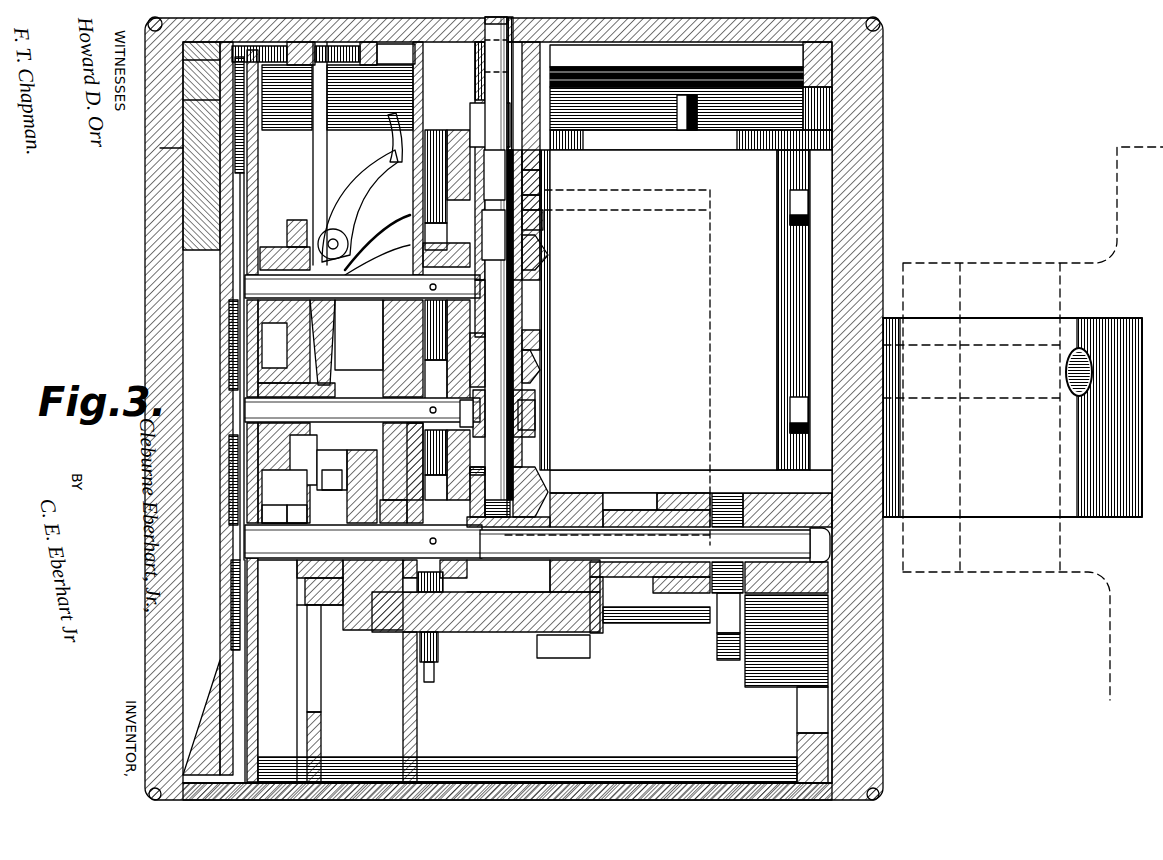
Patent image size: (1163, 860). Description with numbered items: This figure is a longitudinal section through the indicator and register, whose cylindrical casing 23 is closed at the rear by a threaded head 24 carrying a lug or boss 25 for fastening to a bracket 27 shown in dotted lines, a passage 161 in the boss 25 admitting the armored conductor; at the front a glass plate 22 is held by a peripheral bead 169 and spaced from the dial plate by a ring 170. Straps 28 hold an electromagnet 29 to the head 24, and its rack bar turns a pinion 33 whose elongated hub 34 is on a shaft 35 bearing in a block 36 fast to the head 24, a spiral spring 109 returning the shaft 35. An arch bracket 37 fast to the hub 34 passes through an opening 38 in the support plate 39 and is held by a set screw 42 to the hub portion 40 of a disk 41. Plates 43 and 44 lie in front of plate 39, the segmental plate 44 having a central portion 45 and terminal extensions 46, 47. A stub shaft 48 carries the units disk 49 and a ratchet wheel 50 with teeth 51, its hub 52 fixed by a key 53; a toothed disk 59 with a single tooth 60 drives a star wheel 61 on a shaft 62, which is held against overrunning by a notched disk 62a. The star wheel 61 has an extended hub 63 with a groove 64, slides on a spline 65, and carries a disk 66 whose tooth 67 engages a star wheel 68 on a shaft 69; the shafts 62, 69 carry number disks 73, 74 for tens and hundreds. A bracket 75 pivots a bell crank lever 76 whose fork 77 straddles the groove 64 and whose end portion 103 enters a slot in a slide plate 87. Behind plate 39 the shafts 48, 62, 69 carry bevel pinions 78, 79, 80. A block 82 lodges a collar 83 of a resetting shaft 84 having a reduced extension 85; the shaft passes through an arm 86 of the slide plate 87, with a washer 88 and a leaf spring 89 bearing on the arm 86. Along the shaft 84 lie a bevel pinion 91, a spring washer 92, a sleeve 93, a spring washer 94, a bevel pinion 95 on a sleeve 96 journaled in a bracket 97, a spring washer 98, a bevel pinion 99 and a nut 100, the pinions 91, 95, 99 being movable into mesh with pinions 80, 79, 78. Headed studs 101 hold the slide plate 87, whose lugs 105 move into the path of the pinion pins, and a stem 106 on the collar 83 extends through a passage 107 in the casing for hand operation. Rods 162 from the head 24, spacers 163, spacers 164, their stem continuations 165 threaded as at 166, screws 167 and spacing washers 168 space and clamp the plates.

The glass plate 22 is at (145, 286).
The casing 23 is at (490, 783).
The head 24 is at (880, 100).
The lug or boss 25 is at (1012, 417).
The bracket 27 is at (1075, 578).
The straps 28 is at (668, 347).
The electromagnet 29 is at (727, 148).
The pinion 33 is at (685, 580).
The elongated hub 34 is at (630, 580).
The shaft 35 is at (645, 544).
The block 36 is at (840, 575).
The arch bracket 37 is at (475, 625).
The opening 38 is at (405, 655).
The plate 39 is at (418, 728).
The hub portion 40 is at (375, 633).
The disk 41 is at (357, 470).
The set screw 42 is at (385, 553).
The plate 43 is at (250, 735).
The plate 44 is at (321, 690).
The central portion 45 is at (318, 462).
The terminal extension 46 is at (320, 163).
The terminal extension 47 is at (321, 738).
The stub shaft 48 is at (363, 541).
The disk 49 is at (234, 610).
The ratchet wheel 50 is at (325, 633).
The teeth 51 is at (333, 479).
The hub 52 is at (287, 570).
The key 53 is at (287, 516).
The toothed disk 59 is at (310, 600).
The tooth 60 is at (284, 493).
The star wheel 61 is at (247, 393).
The shaft 62 is at (362, 409).
The notched disk 62a is at (403, 356).
The extended hub 63 is at (330, 342).
The circular groove 64 is at (305, 433).
The spline 65 is at (340, 349).
The disk 66 is at (275, 508).
The peripheral tooth 67 is at (240, 337).
The star wheel 68 is at (295, 225).
The shaft 69 is at (362, 296).
The number disk 73 is at (232, 445).
The number disk 74 is at (233, 256).
The bracket 75 is at (360, 206).
The bell crank lever 76 is at (367, 253).
The fork 77 is at (285, 341).
The bevel pinion 78 is at (462, 572).
The bevel pinion 79 is at (455, 465).
The bevel pinion 80 is at (454, 350).
The block 82 is at (503, 267).
The collar 83 is at (505, 161).
The shaft 84 is at (492, 235).
The reduced extension 85 is at (522, 316).
The arm 86 is at (540, 187).
The slide plate 87 is at (432, 690).
The washer 88 is at (540, 162).
The spring 89 is at (540, 205).
The bevel pinion 91 is at (535, 268).
The spring washer 92 is at (543, 225).
The sleeve 93 is at (526, 286).
The spring washer 94 is at (540, 333).
The bevel pinion 95 is at (540, 368).
The sleeve 96 is at (520, 411).
The bracket 97 is at (540, 432).
The spring washer 98 is at (525, 463).
The bevel pinion 99 is at (525, 489).
The nut 100 is at (512, 520).
The headed studs 101 is at (450, 650).
The end portion 103 is at (380, 236).
The lugs 105 is at (446, 240).
The stem 106 is at (497, 43).
The passage 107 is at (562, 58).
The spiral spring 109 is at (725, 597).
The passage 161 is at (1082, 346).
The rods 162 is at (676, 65).
The spacers 163 is at (395, 55).
The spacers 164 is at (300, 63).
The stem continuation 165 is at (310, 66).
The threaded connection 166 is at (342, 68).
The screws 167 is at (185, 100).
The spacing washers 168 is at (162, 149).
The peripheral bead 169 is at (150, 29).
The ring 170 is at (185, 62).